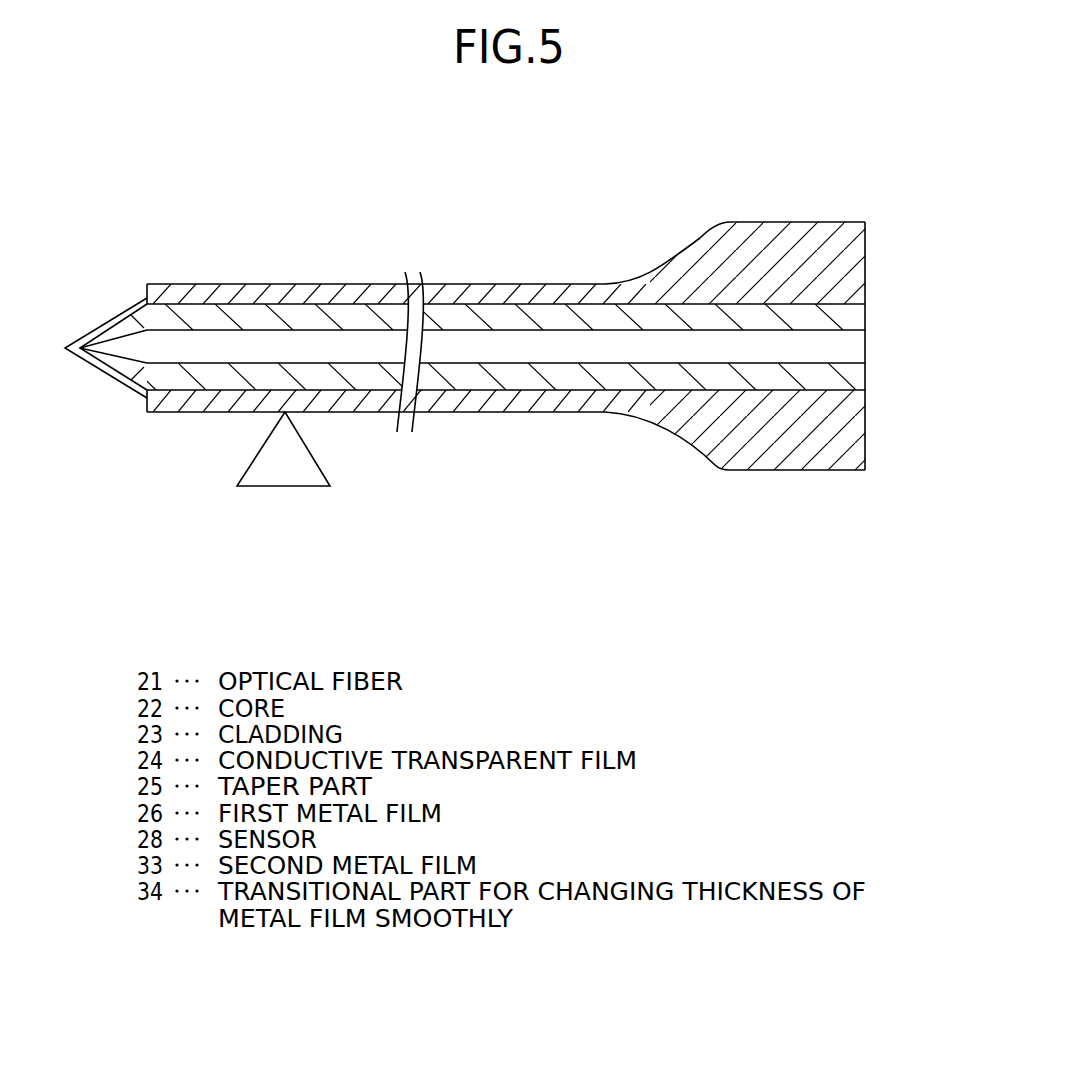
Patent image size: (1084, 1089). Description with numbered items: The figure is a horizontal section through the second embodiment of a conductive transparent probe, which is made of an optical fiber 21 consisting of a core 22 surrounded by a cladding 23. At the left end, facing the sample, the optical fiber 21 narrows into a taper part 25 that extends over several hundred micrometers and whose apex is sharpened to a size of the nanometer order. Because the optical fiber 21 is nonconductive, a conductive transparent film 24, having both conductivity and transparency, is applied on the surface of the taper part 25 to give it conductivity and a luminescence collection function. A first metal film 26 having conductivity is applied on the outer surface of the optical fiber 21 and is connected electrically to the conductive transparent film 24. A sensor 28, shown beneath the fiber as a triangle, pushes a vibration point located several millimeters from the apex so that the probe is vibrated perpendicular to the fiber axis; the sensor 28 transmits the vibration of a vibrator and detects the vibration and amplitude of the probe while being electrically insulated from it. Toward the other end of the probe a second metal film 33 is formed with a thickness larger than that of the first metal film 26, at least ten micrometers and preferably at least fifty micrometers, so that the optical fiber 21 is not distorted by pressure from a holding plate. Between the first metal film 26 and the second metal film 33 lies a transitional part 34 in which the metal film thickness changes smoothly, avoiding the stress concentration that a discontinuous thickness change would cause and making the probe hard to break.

The optical fiber 21 is at (511, 346).
The core 22 is at (613, 347).
The cladding 23 is at (552, 380).
The conductive transparent film 24 is at (100, 372).
The taper part 25 is at (127, 385).
The first metal film 26 is at (508, 402).
The sensor 28 is at (285, 475).
The second metal film 33 is at (793, 230).
The transitional part 34 is at (700, 242).